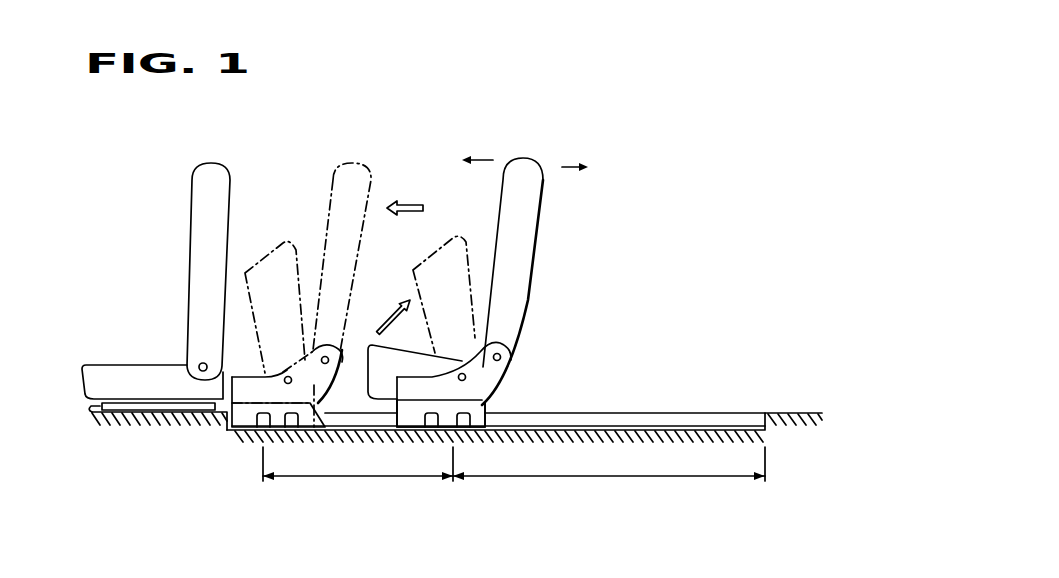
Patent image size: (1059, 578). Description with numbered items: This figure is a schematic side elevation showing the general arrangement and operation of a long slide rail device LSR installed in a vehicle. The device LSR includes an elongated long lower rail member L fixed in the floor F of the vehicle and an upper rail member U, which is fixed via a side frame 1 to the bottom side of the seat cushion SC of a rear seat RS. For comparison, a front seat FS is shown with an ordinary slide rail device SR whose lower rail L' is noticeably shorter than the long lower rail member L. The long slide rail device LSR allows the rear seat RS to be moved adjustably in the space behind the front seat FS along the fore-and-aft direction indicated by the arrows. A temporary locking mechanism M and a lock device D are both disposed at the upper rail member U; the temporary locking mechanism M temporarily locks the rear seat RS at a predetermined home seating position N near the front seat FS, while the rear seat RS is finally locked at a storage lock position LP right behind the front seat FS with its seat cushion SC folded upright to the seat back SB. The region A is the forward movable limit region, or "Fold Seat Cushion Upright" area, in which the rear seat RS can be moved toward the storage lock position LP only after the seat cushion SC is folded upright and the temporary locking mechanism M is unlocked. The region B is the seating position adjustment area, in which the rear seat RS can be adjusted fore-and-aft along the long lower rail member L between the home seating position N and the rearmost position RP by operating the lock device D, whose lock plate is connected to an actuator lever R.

The front seat FS is at (155, 224).
The ordinary slide rail device SR is at (78, 389).
The lower rail of ordinary slide rail device L' is at (135, 423).
The floor F is at (795, 412).
The long lower rail member L is at (498, 375).
The upper rail member U is at (487, 405).
The long slide rail device LSR is at (675, 322).
The lock device D is at (256, 437).
The temporary locking mechanism M is at (293, 436).
The seat back SB is at (337, 172).
The rear seat RS is at (356, 158).
The seat cushion SC is at (262, 253).
The actuator lever R is at (497, 345).
The side frame 1 is at (505, 372).
The storage lock position LP is at (263, 481).
The home seating position N is at (455, 481).
The rearmost position RP is at (765, 483).
The forward movable limit region A is at (358, 491).
The seating position adjustment area B is at (609, 491).